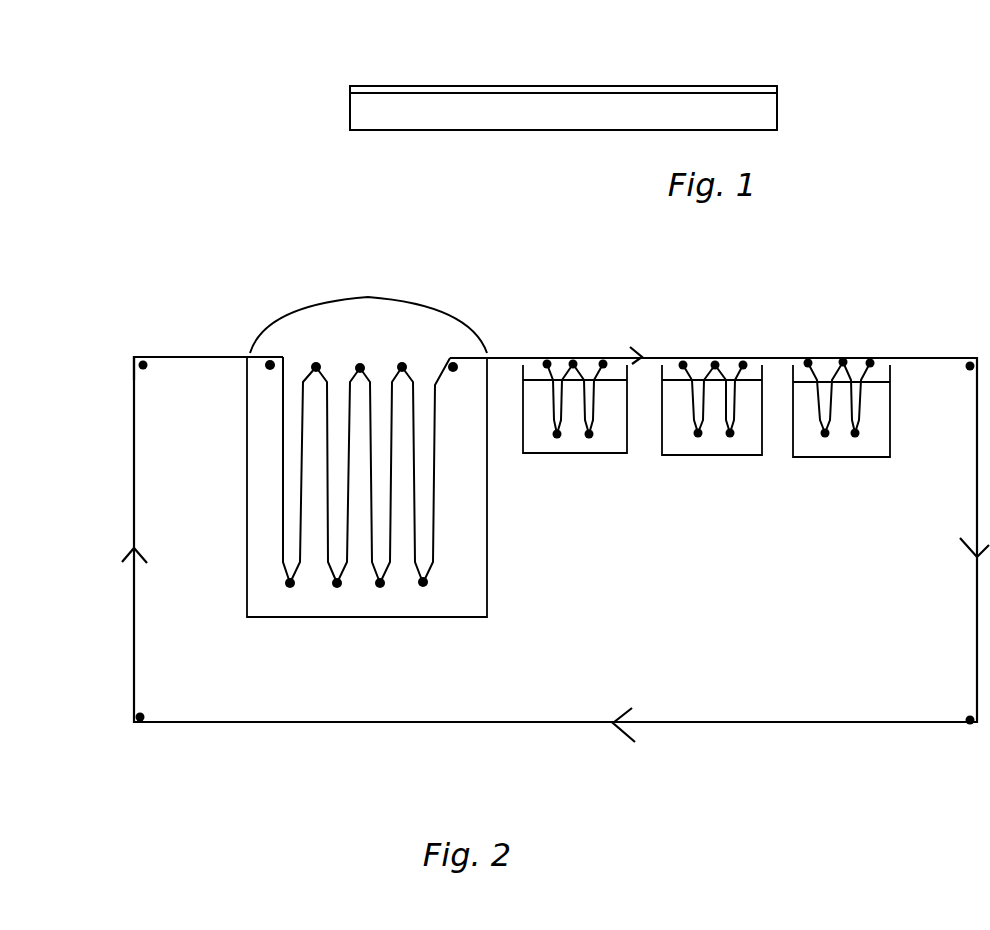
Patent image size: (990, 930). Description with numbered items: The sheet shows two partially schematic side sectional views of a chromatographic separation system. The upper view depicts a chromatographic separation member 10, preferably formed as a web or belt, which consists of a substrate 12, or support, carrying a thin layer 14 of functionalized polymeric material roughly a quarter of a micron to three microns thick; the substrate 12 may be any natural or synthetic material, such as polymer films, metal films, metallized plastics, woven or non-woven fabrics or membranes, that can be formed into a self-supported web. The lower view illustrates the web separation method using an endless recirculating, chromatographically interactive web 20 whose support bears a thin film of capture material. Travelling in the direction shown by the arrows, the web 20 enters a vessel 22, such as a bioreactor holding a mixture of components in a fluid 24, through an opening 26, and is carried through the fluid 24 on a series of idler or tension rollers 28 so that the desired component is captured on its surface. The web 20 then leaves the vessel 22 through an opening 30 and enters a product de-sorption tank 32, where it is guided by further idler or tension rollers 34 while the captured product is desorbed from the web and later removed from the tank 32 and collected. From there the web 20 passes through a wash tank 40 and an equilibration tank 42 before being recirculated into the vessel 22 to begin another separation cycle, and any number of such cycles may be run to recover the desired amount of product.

In FIG. 1, the chromatographic separation member 10 is at (790, 112).
In FIG. 1, the substrate 12 is at (368, 107).
In FIG. 1, the thin layer 14 is at (513, 85).
In FIG. 2, the web 20 is at (413, 725).
In FIG. 2, the vessel 22 is at (485, 605).
In FIG. 2, the fluid 24 is at (455, 545).
In FIG. 2, the opening 26 is at (250, 352).
In FIG. 2, the idler rollers 28 is at (360, 360).
In FIG. 2, the opening 30 is at (493, 353).
In FIG. 2, the product de-sorption tank 32 is at (533, 453).
In FIG. 2, the idler rollers 34 is at (602, 362).
In FIG. 2, the wash tank 40 is at (697, 455).
In FIG. 2, the equilibration tank 42 is at (803, 458).